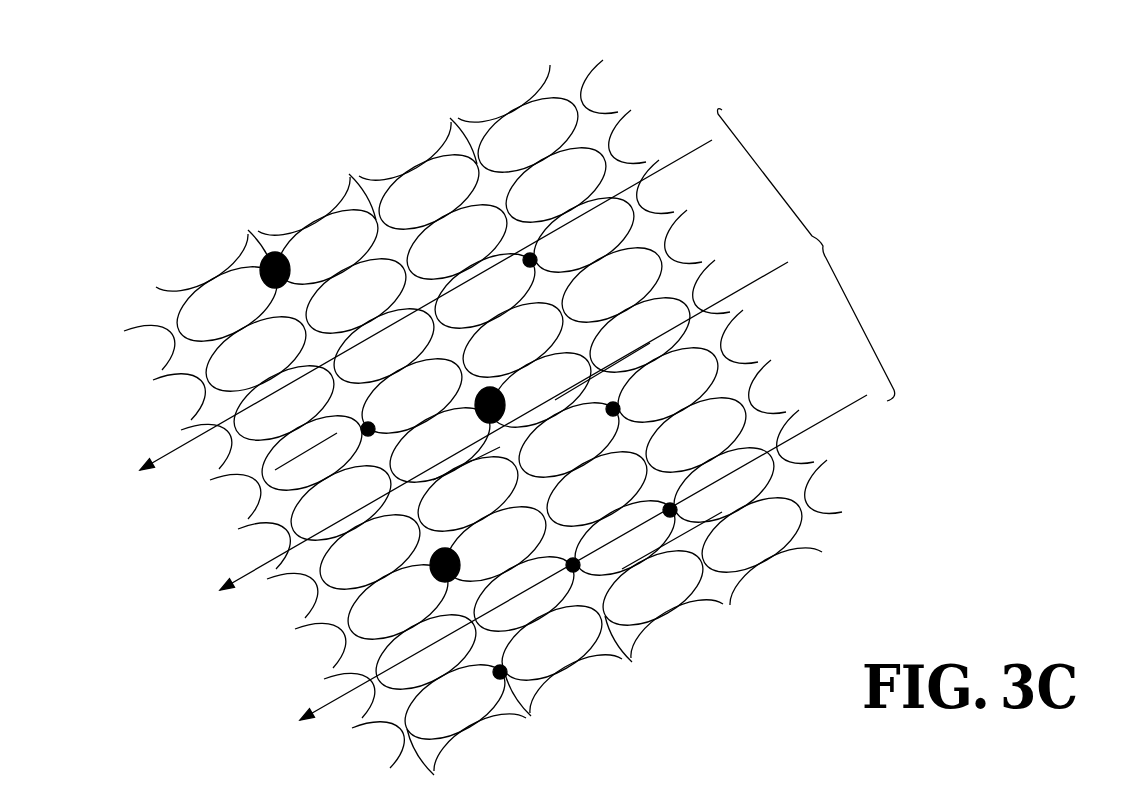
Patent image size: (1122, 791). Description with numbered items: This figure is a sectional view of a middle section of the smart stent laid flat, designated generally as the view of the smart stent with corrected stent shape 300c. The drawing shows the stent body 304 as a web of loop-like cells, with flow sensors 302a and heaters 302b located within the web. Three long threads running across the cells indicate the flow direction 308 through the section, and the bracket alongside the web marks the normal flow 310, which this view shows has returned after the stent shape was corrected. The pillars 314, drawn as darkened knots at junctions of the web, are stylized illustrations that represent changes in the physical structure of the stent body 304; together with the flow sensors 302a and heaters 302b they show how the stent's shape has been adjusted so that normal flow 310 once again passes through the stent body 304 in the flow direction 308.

The view of smart stent with corrected stent shape 300c is at (692, 86).
The flow sensors 302a is at (262, 548).
The heaters 302b is at (531, 690).
The stent body 304 is at (413, 166).
The flow direction 308 is at (150, 468).
The normal flow 310 is at (812, 255).
The pillars 314 is at (279, 256).